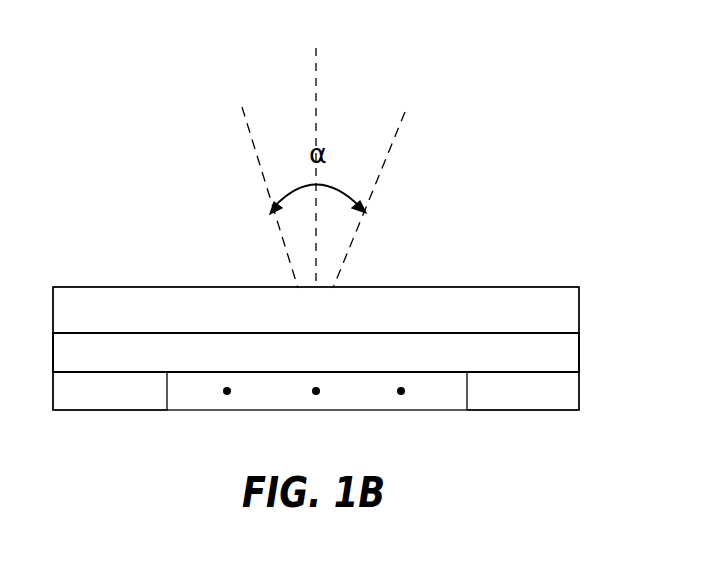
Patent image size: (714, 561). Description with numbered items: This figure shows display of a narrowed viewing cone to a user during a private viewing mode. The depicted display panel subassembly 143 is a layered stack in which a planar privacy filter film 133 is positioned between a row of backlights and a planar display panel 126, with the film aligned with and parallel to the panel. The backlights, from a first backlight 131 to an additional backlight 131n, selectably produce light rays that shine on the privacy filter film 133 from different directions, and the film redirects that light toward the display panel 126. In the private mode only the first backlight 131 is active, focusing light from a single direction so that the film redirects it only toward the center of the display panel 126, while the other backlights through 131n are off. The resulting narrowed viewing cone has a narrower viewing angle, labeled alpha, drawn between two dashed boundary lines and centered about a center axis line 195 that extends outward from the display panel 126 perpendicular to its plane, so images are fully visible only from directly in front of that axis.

The center axis line 195 is at (318, 76).
The display panel subassembly 143 is at (579, 348).
The planar display panel 126 is at (335, 323).
The planar privacy filter film 133 is at (335, 360).
The first backlight 131 is at (132, 400).
The additional backlight 131n is at (550, 400).